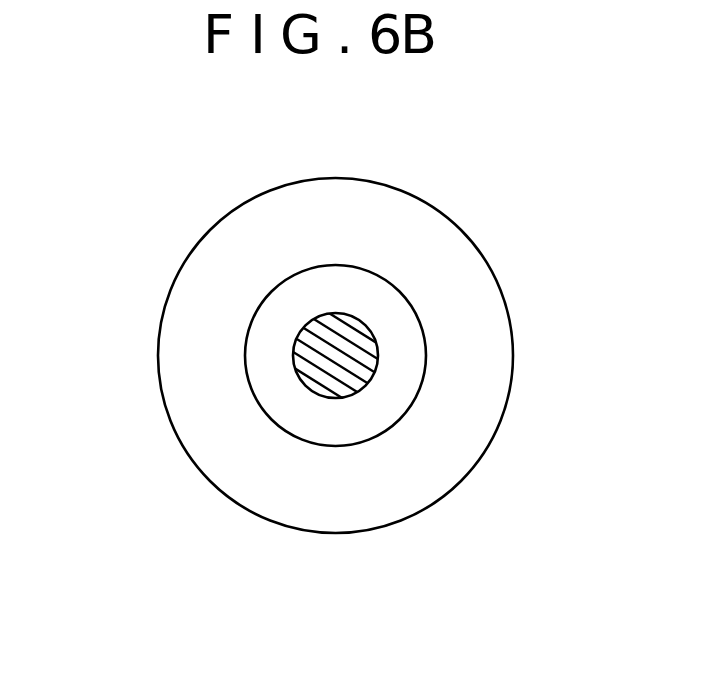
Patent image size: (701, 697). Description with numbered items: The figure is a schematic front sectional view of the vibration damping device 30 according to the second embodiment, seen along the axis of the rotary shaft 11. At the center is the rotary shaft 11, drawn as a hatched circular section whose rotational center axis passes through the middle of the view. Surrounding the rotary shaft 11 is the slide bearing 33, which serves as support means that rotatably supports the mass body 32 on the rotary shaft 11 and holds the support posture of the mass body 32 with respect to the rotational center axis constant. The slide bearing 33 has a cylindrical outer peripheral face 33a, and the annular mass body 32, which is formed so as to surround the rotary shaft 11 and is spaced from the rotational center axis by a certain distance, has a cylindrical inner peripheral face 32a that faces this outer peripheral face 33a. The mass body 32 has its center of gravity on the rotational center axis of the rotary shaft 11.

The vibration damping device 30 is at (416, 152).
The mass body 32 is at (305, 178).
The inner peripheral face 32a is at (366, 279).
The slide bearing 33 is at (278, 378).
The outer peripheral face 33a is at (245, 343).
The rotary shaft 11 is at (337, 392).